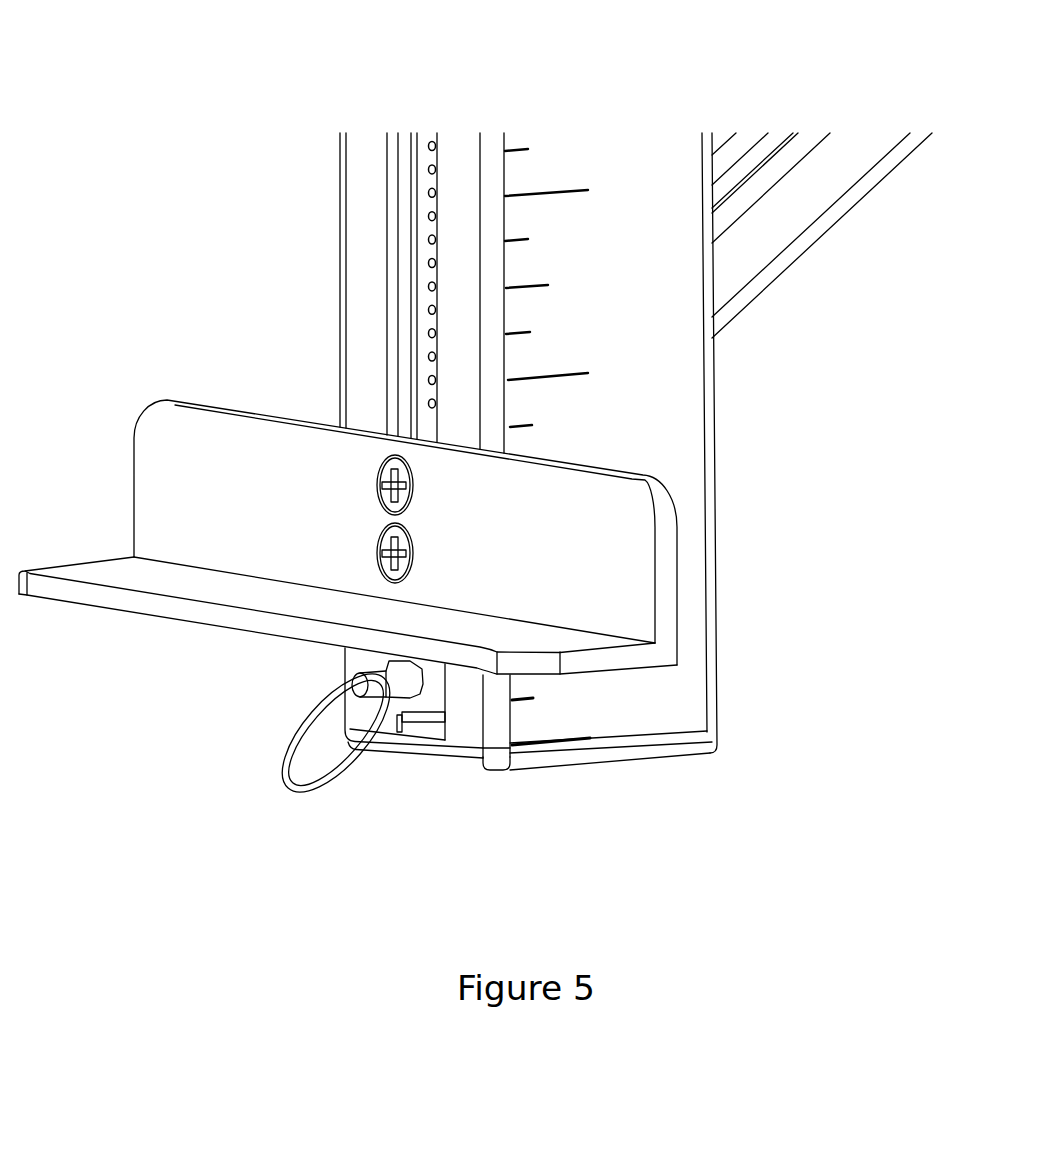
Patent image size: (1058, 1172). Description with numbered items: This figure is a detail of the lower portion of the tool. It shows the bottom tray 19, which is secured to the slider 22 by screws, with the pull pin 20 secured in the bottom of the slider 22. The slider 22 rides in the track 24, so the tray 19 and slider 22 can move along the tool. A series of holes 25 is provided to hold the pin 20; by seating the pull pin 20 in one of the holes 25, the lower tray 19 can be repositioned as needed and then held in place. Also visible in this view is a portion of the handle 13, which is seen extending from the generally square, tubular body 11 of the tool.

The tubular body 11 is at (693, 410).
The handle 13 is at (802, 242).
The bottom tray 19 is at (152, 493).
The pull pin 20 is at (323, 790).
The slider 22 is at (420, 427).
The track 24 is at (417, 202).
The holes 25 is at (428, 137).